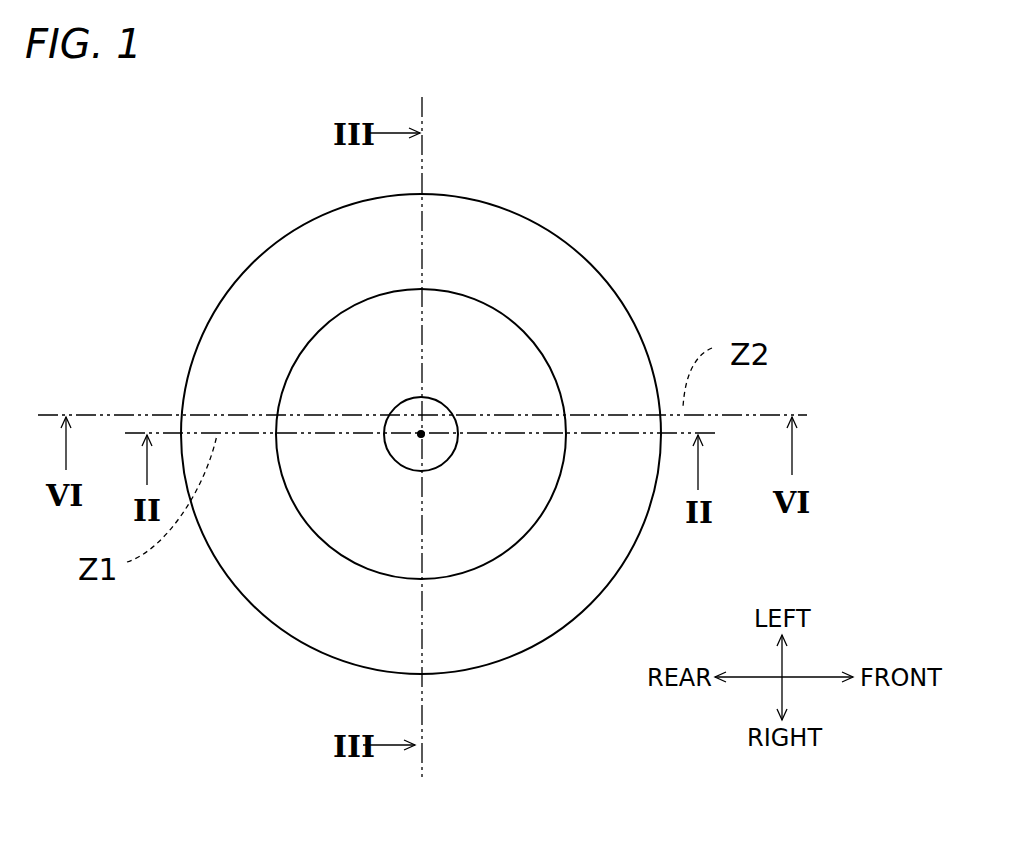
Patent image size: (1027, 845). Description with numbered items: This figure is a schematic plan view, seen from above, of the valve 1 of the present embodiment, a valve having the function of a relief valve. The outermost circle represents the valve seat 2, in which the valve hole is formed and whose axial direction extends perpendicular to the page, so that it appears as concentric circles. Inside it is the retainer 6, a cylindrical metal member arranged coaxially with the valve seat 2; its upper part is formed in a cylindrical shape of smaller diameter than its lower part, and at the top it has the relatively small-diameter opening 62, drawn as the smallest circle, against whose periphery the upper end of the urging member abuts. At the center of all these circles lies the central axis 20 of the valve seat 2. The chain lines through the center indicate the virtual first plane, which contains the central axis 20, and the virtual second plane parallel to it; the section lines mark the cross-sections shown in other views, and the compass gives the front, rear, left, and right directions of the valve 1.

The valve 1 is at (128, 170).
The valve seat 2 is at (323, 237).
The retainer 6 is at (325, 340).
The opening 62 is at (395, 408).
The central axis 20 is at (421, 438).